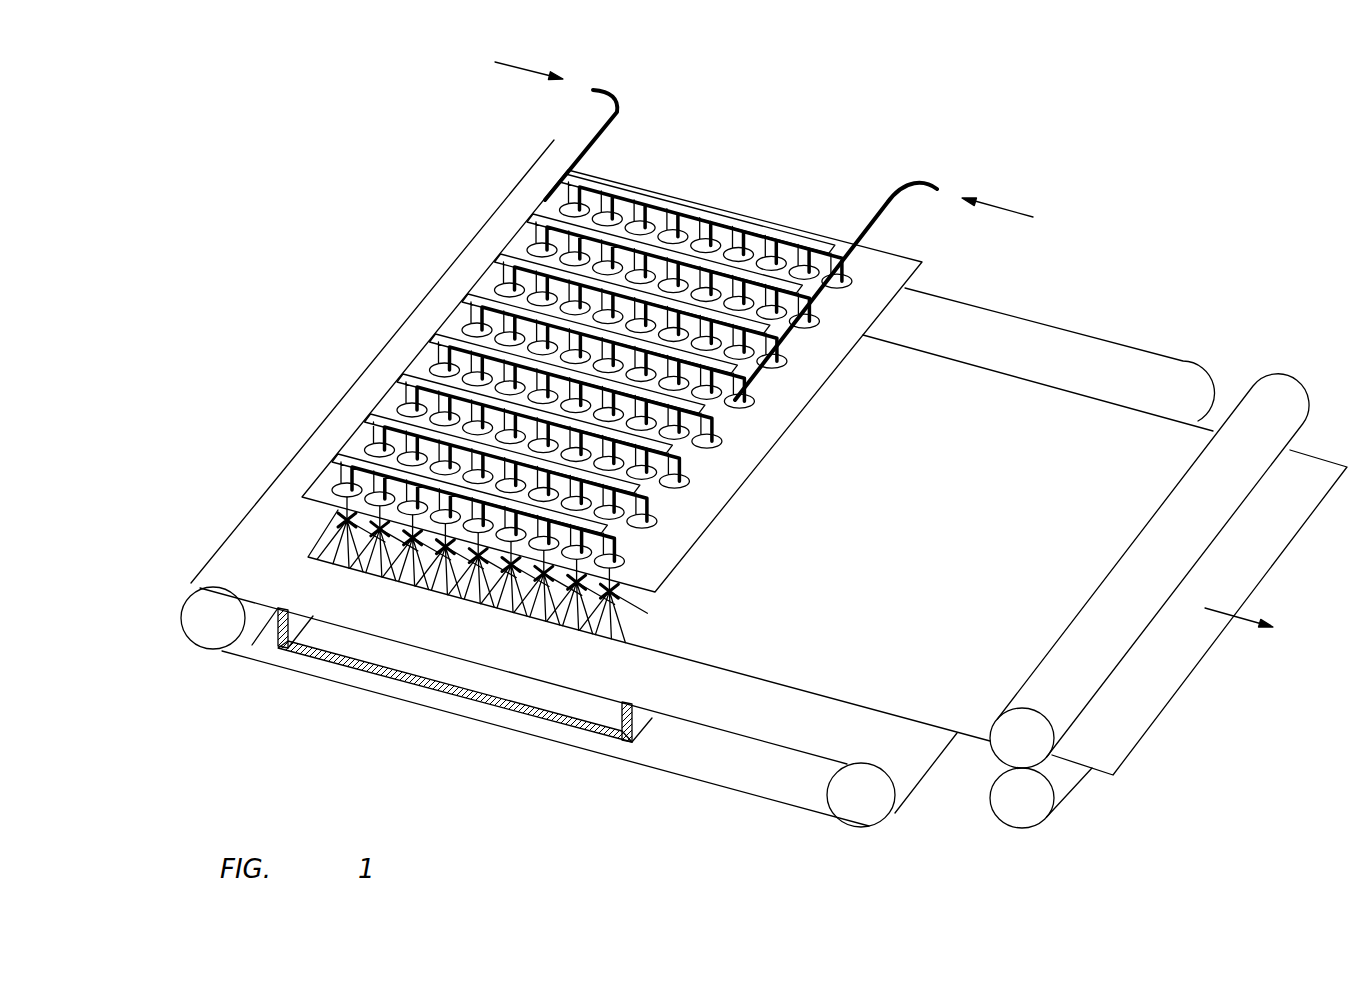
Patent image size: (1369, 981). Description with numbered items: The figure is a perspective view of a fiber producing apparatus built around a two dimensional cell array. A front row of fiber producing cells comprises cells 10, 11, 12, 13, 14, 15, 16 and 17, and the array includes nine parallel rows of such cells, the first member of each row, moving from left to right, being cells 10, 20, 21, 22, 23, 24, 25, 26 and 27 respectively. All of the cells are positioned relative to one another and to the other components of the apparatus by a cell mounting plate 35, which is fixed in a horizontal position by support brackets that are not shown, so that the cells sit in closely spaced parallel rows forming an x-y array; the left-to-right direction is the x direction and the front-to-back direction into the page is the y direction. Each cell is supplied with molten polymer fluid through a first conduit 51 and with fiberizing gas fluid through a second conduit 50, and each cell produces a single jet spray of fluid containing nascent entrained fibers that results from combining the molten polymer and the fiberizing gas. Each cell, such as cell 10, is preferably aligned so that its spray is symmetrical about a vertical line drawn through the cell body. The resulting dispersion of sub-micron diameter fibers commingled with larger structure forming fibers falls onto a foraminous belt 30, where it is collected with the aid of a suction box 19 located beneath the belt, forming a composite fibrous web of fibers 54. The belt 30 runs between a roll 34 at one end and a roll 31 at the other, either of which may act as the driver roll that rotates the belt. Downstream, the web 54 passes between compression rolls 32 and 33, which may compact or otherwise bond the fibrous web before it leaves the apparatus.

The fiber producing cell 10 is at (335, 490).
The fiber producing cell 11 is at (367, 450).
The fiber producing cell 12 is at (400, 410).
The fiber producing cell 13 is at (432, 370).
The fiber producing cell 14 is at (465, 330).
The fiber producing cell 15 is at (498, 290).
The fiber producing cell 16 is at (530, 250).
The fiber producing cell 17 is at (562, 207).
The suction box 19 is at (390, 660).
The fiber producing cell 20 is at (361, 542).
The fiber producing cell 21 is at (394, 551).
The fiber producing cell 22 is at (427, 560).
The fiber producing cell 23 is at (459, 569).
The fiber producing cell 24 is at (492, 578).
The fiber producing cell 25 is at (525, 587).
The fiber producing cell 26 is at (558, 596).
The fiber producing cell 27 is at (591, 605).
The foraminous belt 30 is at (715, 728).
The roll 31 is at (857, 805).
The compression roll 32 is at (1010, 745).
The compression roll 33 is at (1020, 810).
The roll 34 is at (198, 612).
The cell mounting plate 35 is at (735, 205).
The second conduit 50 is at (600, 134).
The first conduit 51 is at (910, 183).
The composite fibrous web 54 is at (914, 549).